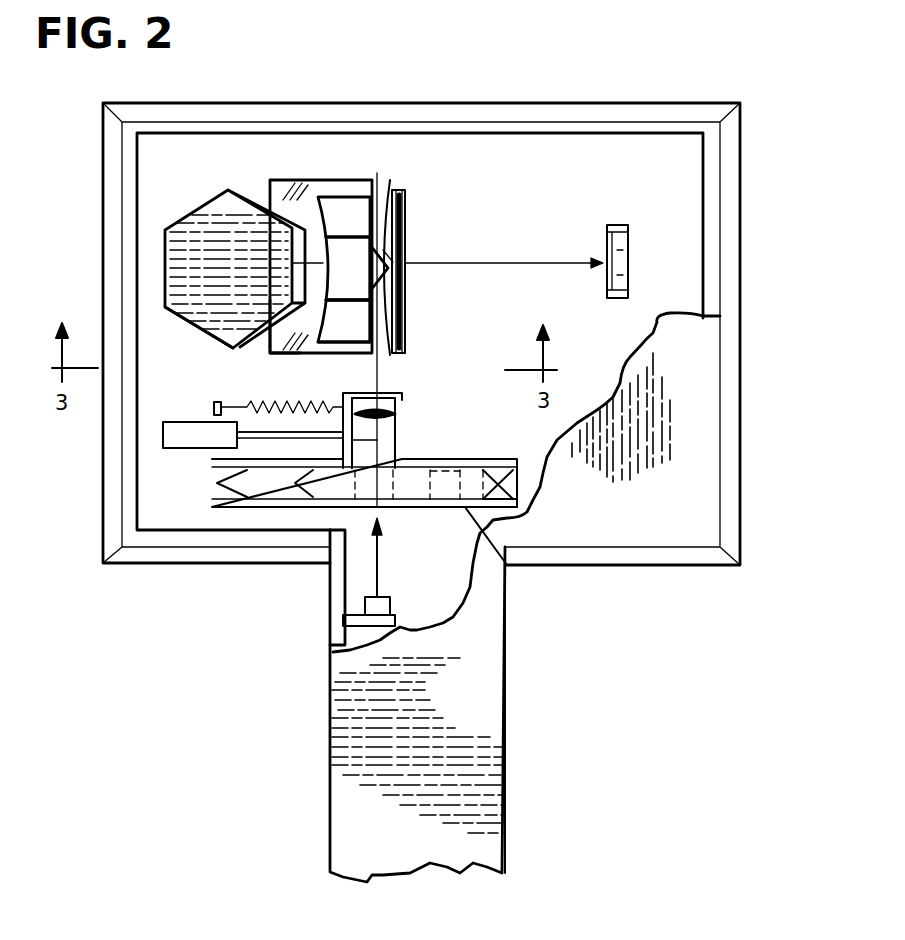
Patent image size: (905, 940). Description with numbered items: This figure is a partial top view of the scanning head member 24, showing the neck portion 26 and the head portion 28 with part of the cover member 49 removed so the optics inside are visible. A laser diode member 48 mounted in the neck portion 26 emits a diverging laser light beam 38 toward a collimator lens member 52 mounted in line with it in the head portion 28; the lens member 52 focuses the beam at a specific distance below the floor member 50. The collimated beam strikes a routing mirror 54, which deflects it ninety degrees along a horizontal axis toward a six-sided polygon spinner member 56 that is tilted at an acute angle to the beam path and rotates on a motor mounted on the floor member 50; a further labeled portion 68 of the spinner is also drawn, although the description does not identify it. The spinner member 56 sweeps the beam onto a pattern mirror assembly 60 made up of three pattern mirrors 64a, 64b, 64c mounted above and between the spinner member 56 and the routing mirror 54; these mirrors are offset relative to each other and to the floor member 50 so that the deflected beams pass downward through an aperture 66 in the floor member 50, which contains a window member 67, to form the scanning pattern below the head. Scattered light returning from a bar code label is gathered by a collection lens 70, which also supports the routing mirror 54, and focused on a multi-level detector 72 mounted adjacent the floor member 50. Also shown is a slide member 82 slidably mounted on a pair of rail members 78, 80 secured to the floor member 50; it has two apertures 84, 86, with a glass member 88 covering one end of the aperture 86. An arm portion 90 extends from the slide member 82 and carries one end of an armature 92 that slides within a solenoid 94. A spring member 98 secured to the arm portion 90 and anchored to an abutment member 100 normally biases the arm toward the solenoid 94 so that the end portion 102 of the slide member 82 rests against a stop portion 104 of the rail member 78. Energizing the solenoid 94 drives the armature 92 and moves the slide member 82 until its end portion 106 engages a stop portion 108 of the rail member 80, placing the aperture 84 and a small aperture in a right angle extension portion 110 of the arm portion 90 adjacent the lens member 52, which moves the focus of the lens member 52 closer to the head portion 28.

The scanning head member 24 is at (585, 619).
The neck portion 26 is at (507, 782).
The head portion 28 is at (717, 190).
The laser light beam 38 is at (379, 580).
The laser diode member 48 is at (365, 600).
The cover member 49 is at (693, 440).
The floor member 50 is at (497, 148).
The collimator lens member 52 is at (397, 414).
The routing mirror 54 is at (406, 230).
The polygon spinner member 56 is at (197, 327).
The pattern mirror assembly 60 is at (384, 192).
The pattern mirror 64a is at (357, 200).
The pattern mirror 64b is at (371, 280).
The pattern mirror 64c is at (373, 352).
The aperture 66 is at (272, 180).
The window member 67 is at (270, 353).
The prism lower face 68 is at (218, 338).
The collection lens 70 is at (410, 277).
The multi-level detector 72 is at (608, 225).
The rail member 78 is at (233, 507).
The rail member 80 is at (507, 565).
The slide member 82 is at (385, 507).
The aperture 84 is at (357, 483).
The aperture 86 is at (460, 487).
The glass member 88 is at (457, 467).
The arm portion 90 is at (373, 441).
The armature 92 is at (280, 432).
The solenoid 94 is at (190, 450).
The spring member 98 is at (215, 402).
The abutment member 100 is at (215, 408).
The end portion 102 is at (308, 500).
The stop portion 104 is at (215, 484).
The end portion 106 is at (493, 515).
The stop portion 108 is at (510, 475).
The right angle extension portion 110 is at (402, 390).